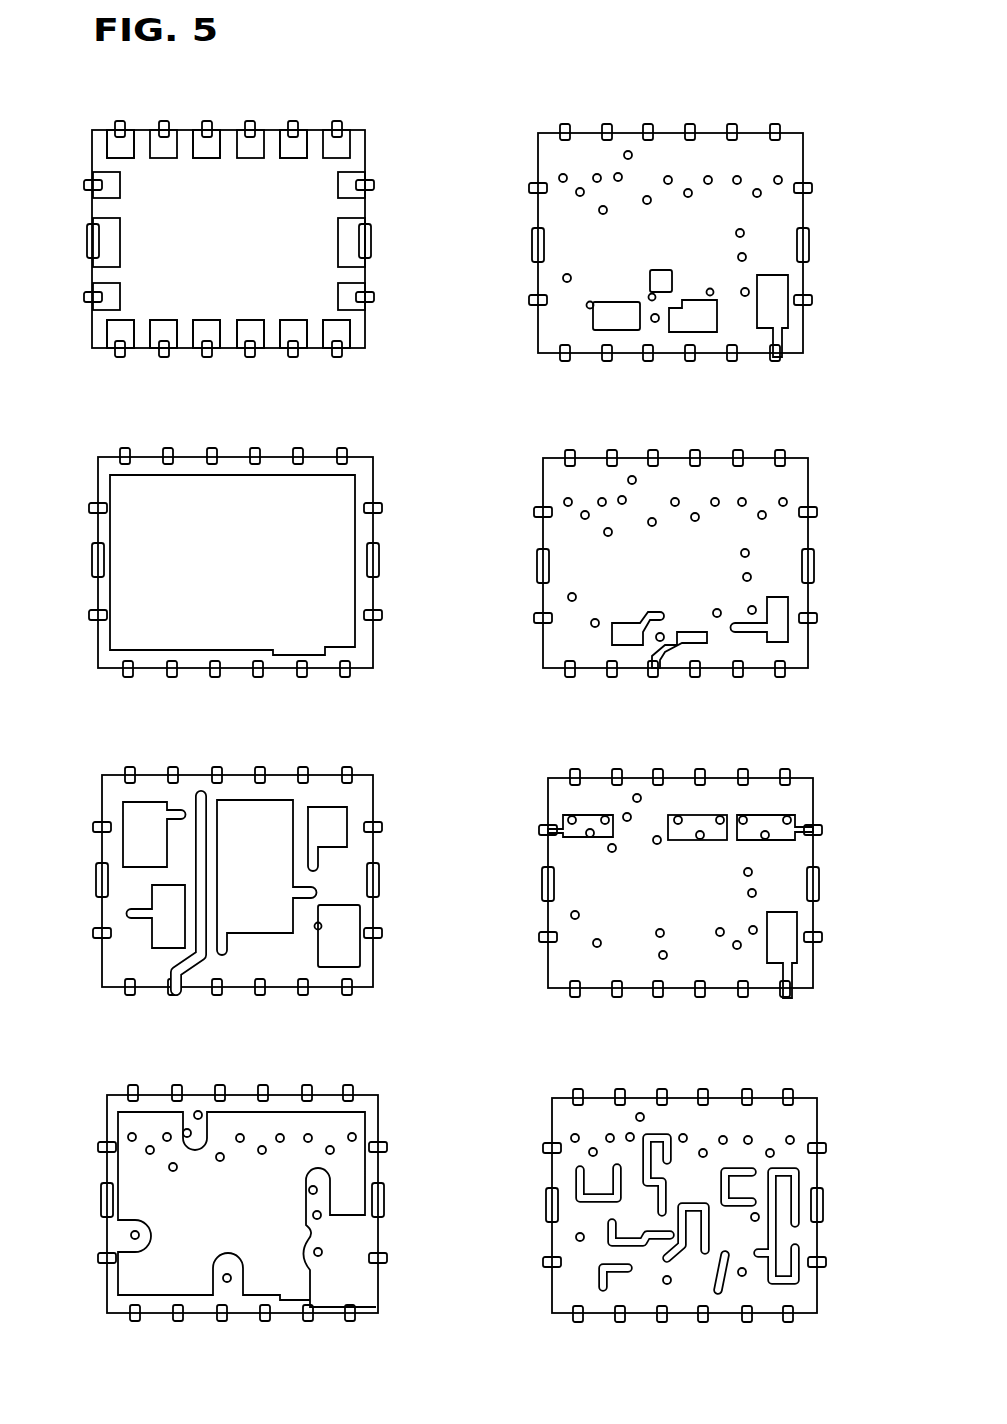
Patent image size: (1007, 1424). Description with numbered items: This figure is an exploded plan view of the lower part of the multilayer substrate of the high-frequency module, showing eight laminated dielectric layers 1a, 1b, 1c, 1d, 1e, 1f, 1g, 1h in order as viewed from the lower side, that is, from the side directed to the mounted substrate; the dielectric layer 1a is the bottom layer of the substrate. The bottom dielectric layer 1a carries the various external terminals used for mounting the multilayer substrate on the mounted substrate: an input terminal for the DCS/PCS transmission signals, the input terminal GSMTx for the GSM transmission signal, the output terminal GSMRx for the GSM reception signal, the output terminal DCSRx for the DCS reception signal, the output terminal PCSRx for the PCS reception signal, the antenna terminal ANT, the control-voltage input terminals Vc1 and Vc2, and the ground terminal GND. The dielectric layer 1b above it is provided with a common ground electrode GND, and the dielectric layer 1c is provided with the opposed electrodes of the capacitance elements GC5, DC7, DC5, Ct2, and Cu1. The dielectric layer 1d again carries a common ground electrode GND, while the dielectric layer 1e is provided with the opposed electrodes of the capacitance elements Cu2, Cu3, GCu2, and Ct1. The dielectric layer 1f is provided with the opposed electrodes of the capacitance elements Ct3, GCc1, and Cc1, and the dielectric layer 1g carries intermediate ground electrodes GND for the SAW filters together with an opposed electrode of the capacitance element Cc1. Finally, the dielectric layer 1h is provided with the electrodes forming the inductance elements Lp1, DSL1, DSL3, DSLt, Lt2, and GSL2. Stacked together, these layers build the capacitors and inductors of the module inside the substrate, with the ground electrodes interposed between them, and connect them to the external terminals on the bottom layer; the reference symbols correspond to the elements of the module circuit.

The dielectric layer 1a is at (97, 142).
The dielectric layer 1b is at (117, 468).
The dielectric layer 1c is at (115, 792).
The dielectric layer 1d is at (117, 1108).
The dielectric layer 1e is at (550, 143).
The dielectric layer 1f is at (555, 475).
The dielectric layer 1g is at (558, 793).
The dielectric layer 1h is at (558, 1108).
The PCS reception output terminal PCSRx is at (122, 121).
The DCS reception output terminal DCSRx is at (203, 121).
The GSM reception output terminal GSMRx is at (293, 121).
The ground terminal / ground electrode GND is at (83, 236).
The control-voltage input terminal Vc2 is at (167, 363).
The GSM transmission input terminal GSMTx is at (213, 351).
The control-voltage input terminal Vc1 is at (253, 363).
The antenna terminal ANT is at (337, 362).
The capacitance element DC7 is at (147, 807).
The capacitance element GC5 is at (267, 807).
The capacitance element Ct2 is at (342, 818).
The capacitance element DC5 is at (153, 930).
The capacitance element Cu1 is at (353, 948).
The capacitance element Cu2 is at (650, 282).
The capacitance element Cu3 is at (610, 323).
The capacitance element GCu2 is at (678, 323).
The capacitance element Ct1 is at (760, 323).
The capacitance element Ct3 is at (632, 637).
The capacitance element GCc1 is at (670, 657).
The capacitance element Cc1 is at (773, 638).
The inductance element Lp1 is at (580, 1180).
The inductance element DSL3 is at (668, 1130).
The inductance element Lt2 is at (738, 1173).
The inductance element DSL1 is at (613, 1242).
The inductance element DSLt is at (683, 1263).
The inductance element GSL2 is at (773, 1277).